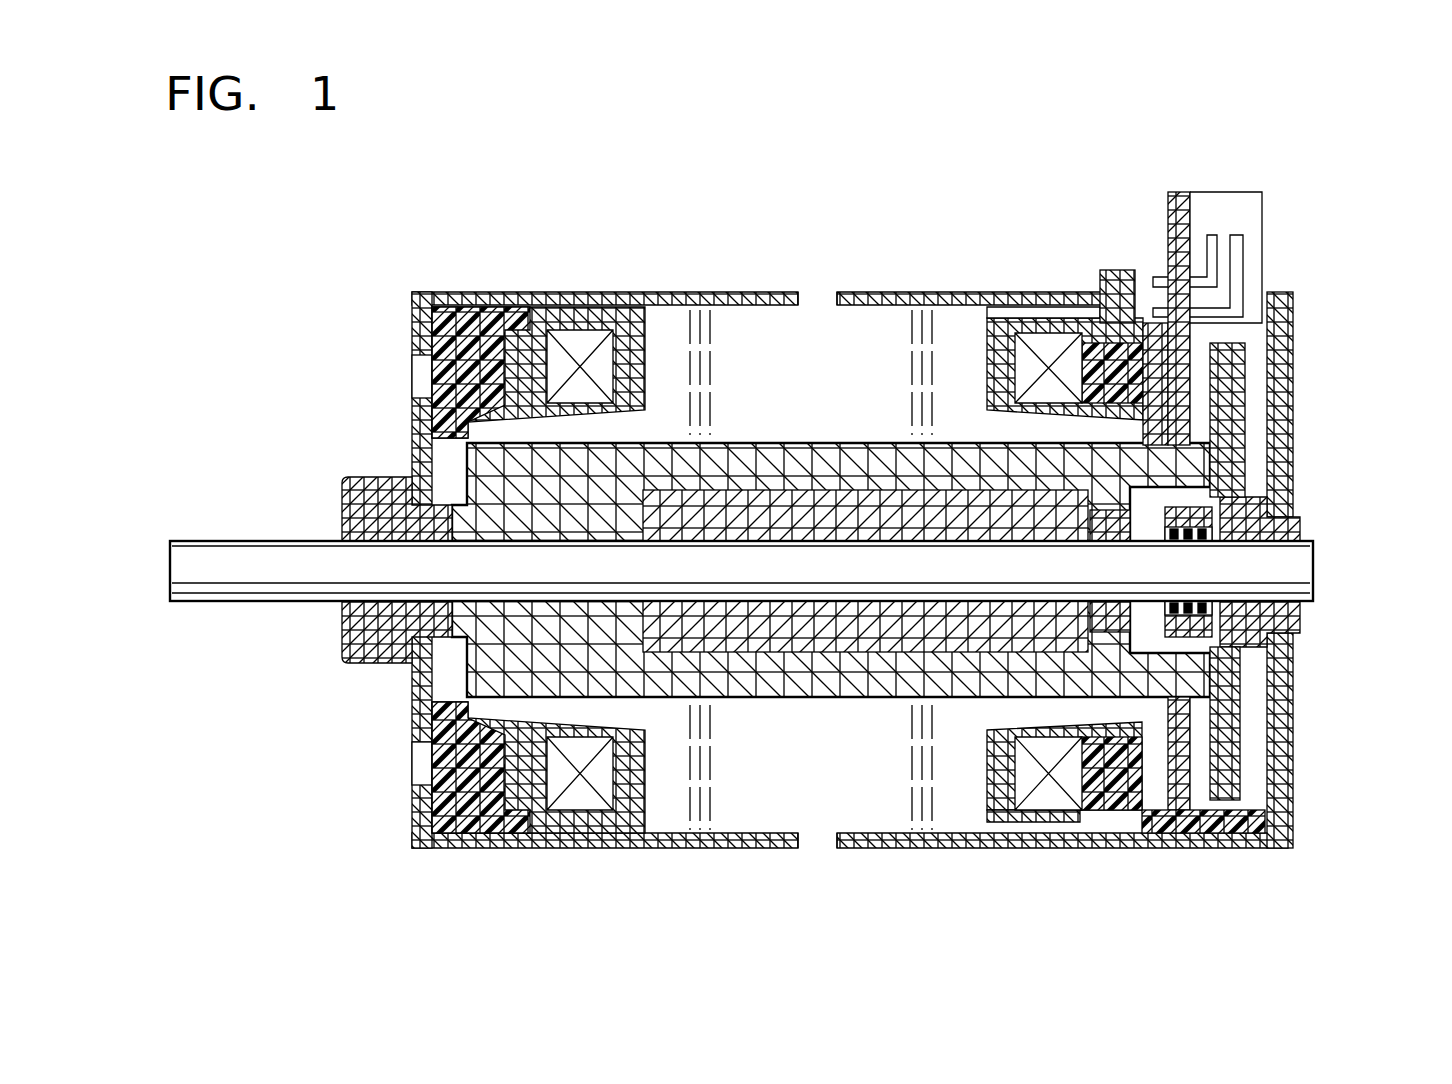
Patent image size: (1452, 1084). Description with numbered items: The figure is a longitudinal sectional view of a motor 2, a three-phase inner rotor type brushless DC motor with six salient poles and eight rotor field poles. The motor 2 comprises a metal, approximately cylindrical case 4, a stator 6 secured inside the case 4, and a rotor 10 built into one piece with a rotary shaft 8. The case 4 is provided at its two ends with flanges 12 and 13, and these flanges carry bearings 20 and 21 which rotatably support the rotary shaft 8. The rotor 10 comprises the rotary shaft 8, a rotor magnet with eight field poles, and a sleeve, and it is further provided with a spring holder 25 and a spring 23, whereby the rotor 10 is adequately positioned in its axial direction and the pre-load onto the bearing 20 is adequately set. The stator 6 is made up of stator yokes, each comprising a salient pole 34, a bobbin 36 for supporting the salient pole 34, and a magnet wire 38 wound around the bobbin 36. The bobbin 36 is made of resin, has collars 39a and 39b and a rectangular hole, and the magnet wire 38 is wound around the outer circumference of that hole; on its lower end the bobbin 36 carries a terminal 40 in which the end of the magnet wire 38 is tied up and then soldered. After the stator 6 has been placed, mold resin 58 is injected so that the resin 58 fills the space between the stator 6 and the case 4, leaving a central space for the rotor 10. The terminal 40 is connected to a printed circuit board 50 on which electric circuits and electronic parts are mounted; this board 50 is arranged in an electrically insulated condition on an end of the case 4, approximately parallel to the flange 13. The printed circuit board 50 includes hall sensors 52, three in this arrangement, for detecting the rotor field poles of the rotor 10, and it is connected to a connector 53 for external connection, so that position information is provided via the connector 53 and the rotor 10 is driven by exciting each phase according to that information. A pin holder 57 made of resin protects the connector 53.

The motor 2 is at (794, 232).
The case 4 is at (617, 300).
The stator 6 is at (842, 283).
The rotary shaft 8 is at (243, 553).
The rotor 10 is at (495, 660).
The flange 12 is at (420, 337).
The flange 13 is at (1298, 378).
The bearing 20 is at (363, 640).
The bearing 21 is at (1290, 528).
The spring 23 is at (1212, 612).
The spring holder 25 is at (1143, 627).
The salient pole 34 is at (724, 332).
The bobbin 36 is at (995, 322).
The magnet wire 38 is at (1052, 345).
The collar 39a is at (563, 317).
The collar 39b is at (500, 390).
The terminal 40 is at (1187, 725).
The printed circuit board 50 is at (1148, 176).
The hall sensor 52 is at (1190, 787).
The connector 53 is at (1296, 210).
The pin holder 57 is at (1125, 270).
The resin 58 is at (457, 803).